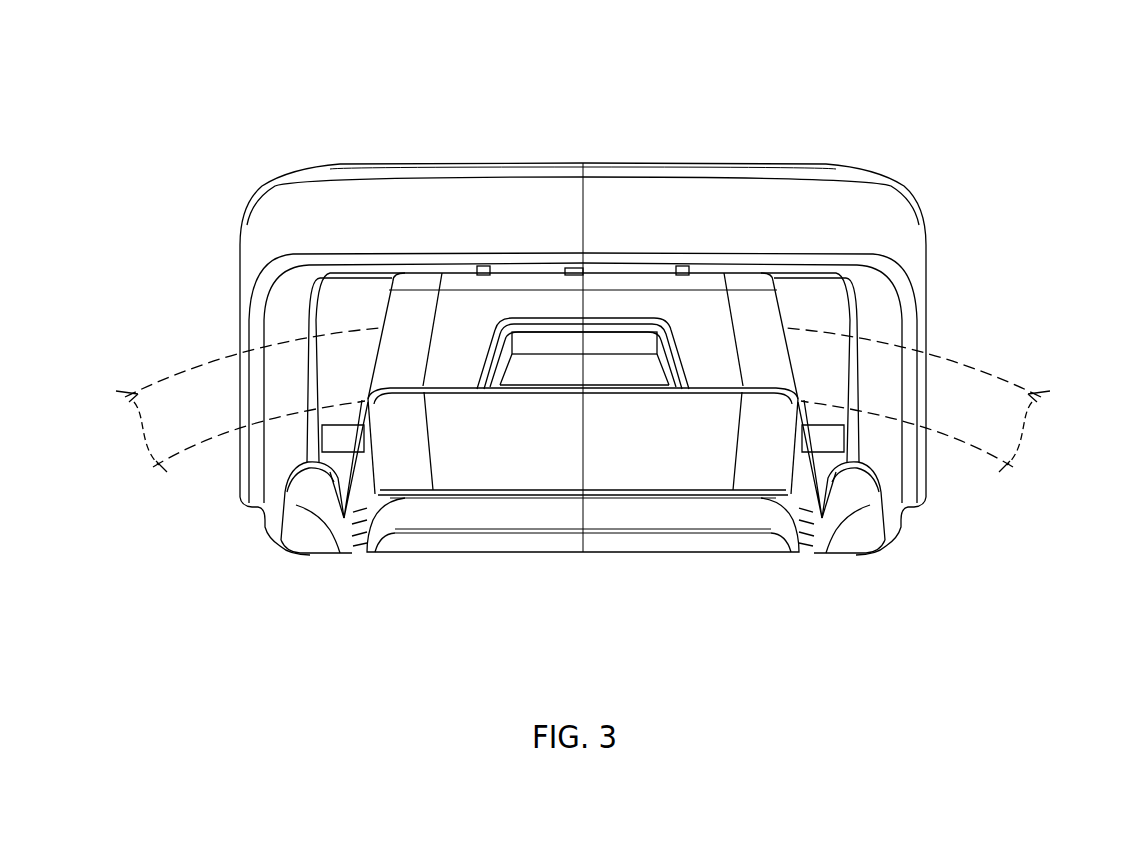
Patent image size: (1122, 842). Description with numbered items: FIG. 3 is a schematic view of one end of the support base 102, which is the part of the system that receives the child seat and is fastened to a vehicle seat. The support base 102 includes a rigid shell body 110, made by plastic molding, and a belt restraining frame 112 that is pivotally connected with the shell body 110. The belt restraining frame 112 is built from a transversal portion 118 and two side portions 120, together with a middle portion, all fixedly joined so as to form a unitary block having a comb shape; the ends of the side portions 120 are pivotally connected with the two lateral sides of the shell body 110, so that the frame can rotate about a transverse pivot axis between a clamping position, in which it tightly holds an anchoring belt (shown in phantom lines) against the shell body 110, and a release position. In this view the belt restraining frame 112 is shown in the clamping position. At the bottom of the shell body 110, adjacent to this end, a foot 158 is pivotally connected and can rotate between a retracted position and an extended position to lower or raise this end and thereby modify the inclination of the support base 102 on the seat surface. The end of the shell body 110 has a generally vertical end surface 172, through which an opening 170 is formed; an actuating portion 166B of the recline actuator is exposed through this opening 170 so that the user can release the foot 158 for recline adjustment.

The support base 102 is at (1062, 85).
The belt restraining frame 112 is at (242, 177).
The transversal portion 118 is at (680, 176).
The side portions 120 is at (240, 323).
The opening 170 is at (478, 320).
The actuating portion 166B is at (571, 350).
The end surface 172 is at (693, 305).
The foot 158 is at (470, 546).
The shell body 110 is at (866, 538).